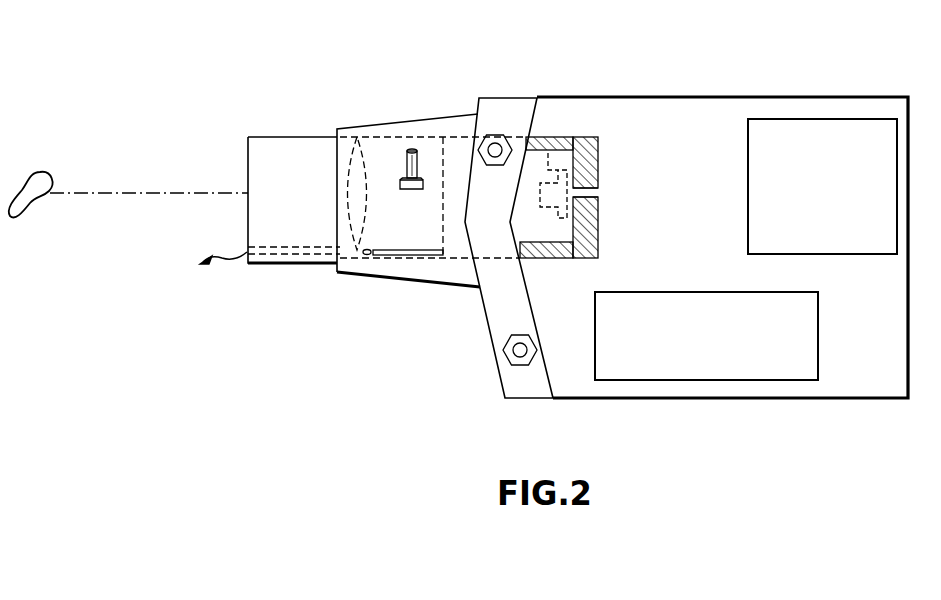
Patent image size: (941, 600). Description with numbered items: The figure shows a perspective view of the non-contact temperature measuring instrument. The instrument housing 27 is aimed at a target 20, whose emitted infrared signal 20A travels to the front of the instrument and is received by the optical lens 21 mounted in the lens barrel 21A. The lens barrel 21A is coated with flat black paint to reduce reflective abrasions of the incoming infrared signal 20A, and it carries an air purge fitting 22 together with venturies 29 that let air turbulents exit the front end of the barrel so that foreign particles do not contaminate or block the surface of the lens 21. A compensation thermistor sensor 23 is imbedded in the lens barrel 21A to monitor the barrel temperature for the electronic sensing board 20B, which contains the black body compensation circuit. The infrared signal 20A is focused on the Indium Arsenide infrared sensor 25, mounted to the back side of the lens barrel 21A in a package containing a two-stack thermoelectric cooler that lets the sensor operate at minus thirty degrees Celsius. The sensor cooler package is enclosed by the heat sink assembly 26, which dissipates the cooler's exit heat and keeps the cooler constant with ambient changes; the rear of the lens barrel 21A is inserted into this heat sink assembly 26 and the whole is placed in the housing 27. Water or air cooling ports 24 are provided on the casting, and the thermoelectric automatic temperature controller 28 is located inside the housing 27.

The target 20 is at (37, 195).
The infrared signal 20A is at (149, 181).
The electronic sensing board 20B is at (716, 372).
The lens 21 is at (374, 131).
The lens barrel 21A is at (248, 153).
The air purge fitting 22 is at (419, 160).
The compensation thermistor sensor 23 is at (447, 298).
The water or air cooling ports 24 is at (362, 376).
The infrared sensor 25 is at (540, 130).
The heat sink assembly 26 is at (599, 216).
The instrument housing 27 is at (889, 95).
The thermoelectric automatic temperature controller 28 is at (822, 237).
The venturies 29 is at (248, 247).